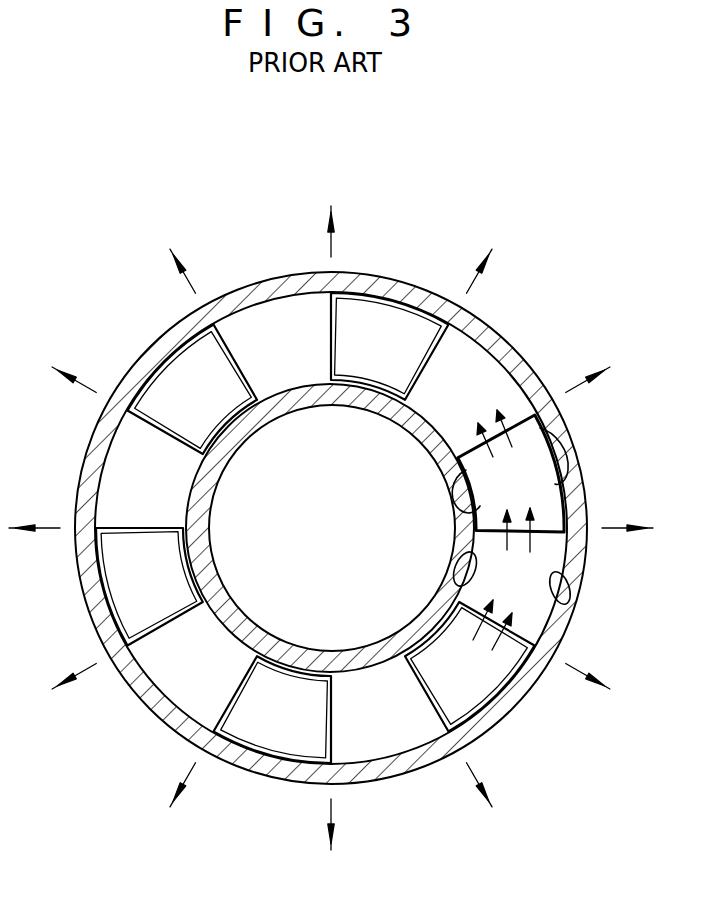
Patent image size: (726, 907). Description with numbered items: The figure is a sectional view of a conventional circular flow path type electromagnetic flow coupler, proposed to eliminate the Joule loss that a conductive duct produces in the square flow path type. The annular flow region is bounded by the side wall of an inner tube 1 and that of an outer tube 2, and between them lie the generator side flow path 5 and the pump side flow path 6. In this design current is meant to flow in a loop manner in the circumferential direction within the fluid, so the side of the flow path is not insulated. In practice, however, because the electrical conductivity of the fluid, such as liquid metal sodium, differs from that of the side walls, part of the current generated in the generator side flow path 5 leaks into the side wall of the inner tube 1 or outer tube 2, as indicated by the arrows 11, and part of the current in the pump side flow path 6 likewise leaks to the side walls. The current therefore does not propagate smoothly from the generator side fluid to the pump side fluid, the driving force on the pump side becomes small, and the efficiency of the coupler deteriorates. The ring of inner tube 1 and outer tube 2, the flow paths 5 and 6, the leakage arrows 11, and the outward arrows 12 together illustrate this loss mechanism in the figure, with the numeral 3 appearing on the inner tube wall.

The inner tube 1 is at (203, 493).
The outer tube 2 is at (272, 287).
The inner ring outer wall 3 is at (328, 357).
The generator side flow path 5 is at (453, 345).
The pump side flow path 6 is at (538, 427).
The arrows 11 is at (478, 425).
The flow direction arrows 12 is at (330, 233).